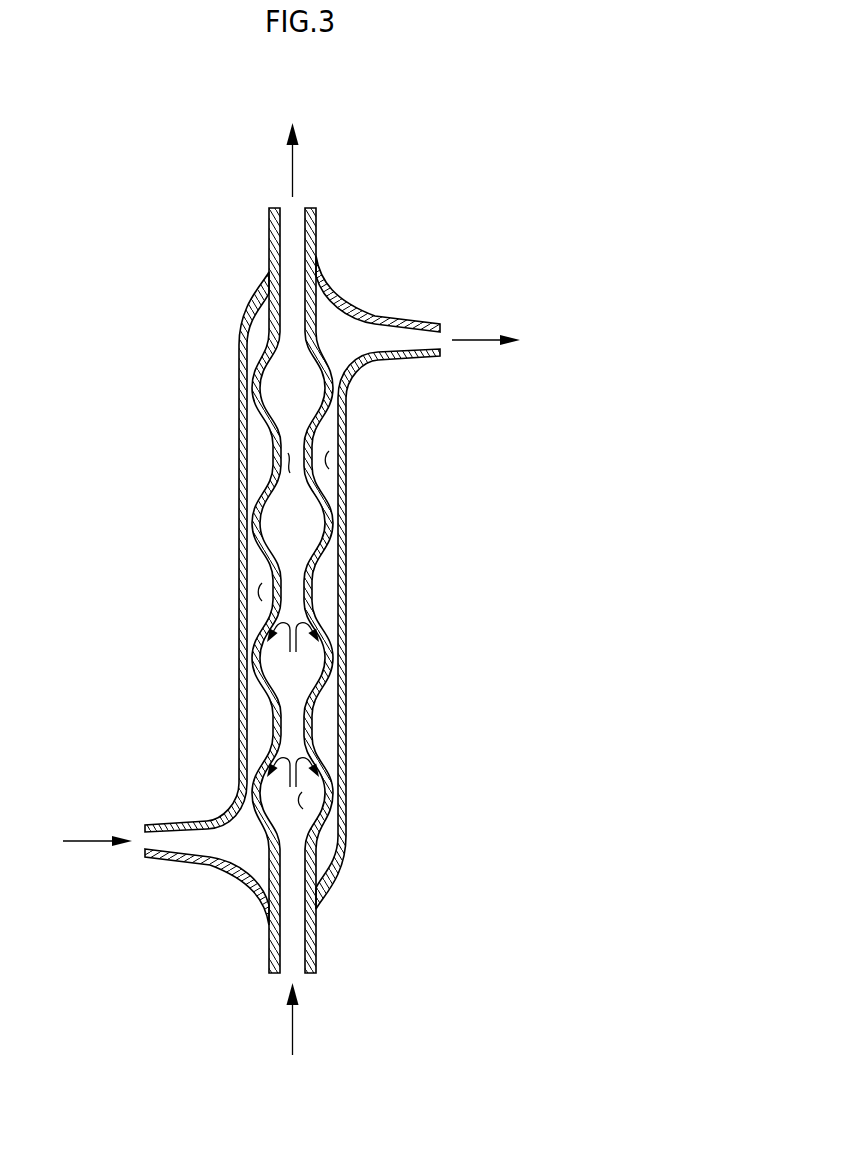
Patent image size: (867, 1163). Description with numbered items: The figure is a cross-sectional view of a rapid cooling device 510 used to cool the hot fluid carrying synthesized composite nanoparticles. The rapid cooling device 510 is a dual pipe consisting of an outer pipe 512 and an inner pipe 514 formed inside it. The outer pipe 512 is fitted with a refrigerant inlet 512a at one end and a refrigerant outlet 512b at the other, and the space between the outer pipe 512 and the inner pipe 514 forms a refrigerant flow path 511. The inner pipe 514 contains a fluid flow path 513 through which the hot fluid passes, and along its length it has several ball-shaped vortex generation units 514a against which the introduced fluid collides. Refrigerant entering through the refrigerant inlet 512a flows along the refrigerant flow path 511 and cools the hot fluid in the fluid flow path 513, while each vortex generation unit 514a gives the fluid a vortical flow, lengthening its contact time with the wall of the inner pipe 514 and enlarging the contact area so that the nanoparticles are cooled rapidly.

The rapid cooling device 510 is at (282, 589).
The refrigerant flow path 511 is at (328, 458).
The outer pipe 512 is at (282, 586).
The refrigerant inlet 512a is at (183, 823).
The refrigerant outlet 512b is at (405, 320).
The fluid flow path 513 is at (287, 465).
The inner pipe 514 is at (296, 590).
The vortex generation unit 514a is at (258, 363).